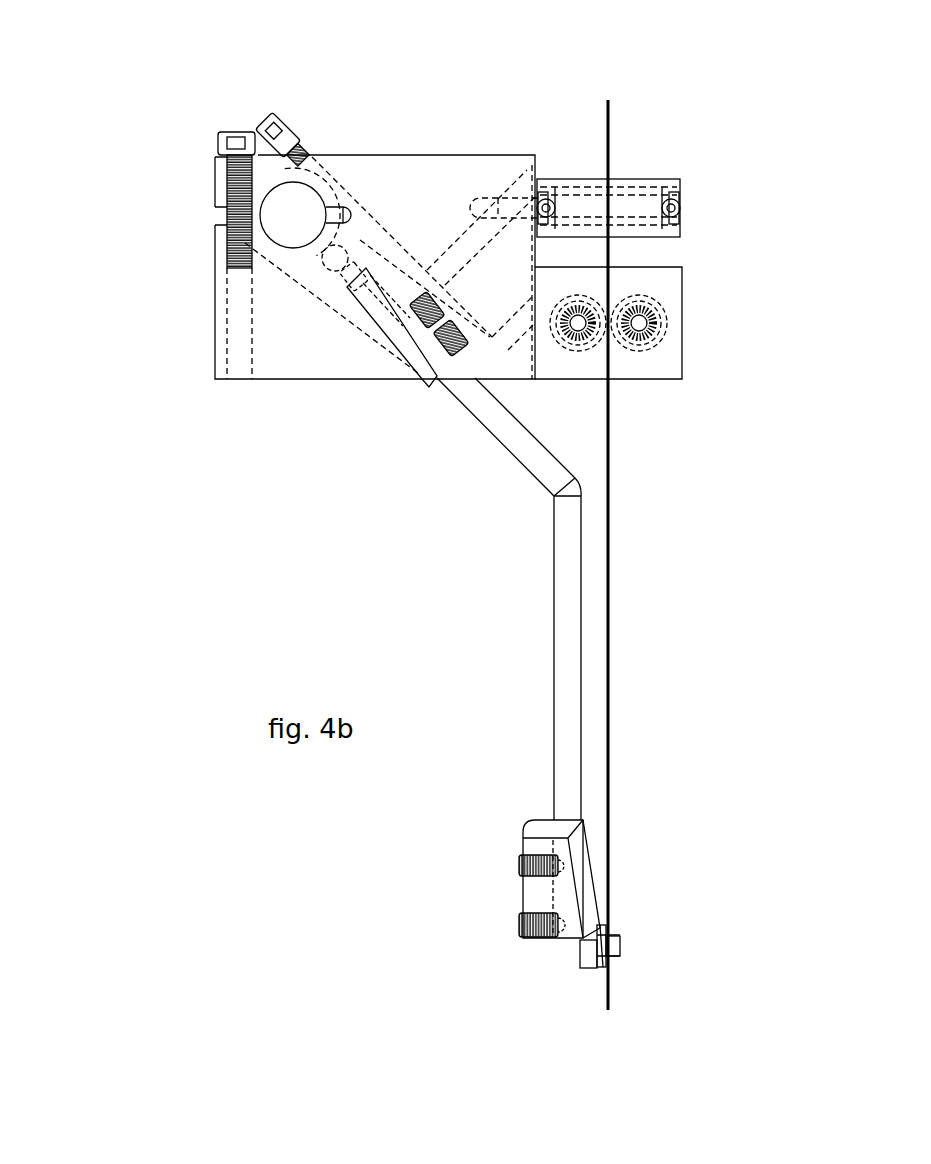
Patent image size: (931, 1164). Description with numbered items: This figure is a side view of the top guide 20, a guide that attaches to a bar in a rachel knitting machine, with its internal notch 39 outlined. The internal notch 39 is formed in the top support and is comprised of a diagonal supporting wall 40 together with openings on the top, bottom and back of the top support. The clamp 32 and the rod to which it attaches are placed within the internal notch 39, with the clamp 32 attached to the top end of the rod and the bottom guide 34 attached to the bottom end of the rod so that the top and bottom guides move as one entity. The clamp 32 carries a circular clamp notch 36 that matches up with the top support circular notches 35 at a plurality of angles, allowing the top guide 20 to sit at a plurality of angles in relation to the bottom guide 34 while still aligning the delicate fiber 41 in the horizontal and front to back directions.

The top guide 20 is at (667, 166).
The clamp 32 is at (333, 288).
The bottom guide 34 is at (565, 903).
The top support circular notches 35 is at (282, 217).
The circular clamp notch 36 is at (90, 232).
The internal notch 39 is at (285, 330).
The diagonal supporting wall 40 is at (430, 203).
The delicate fiber 41 is at (612, 661).